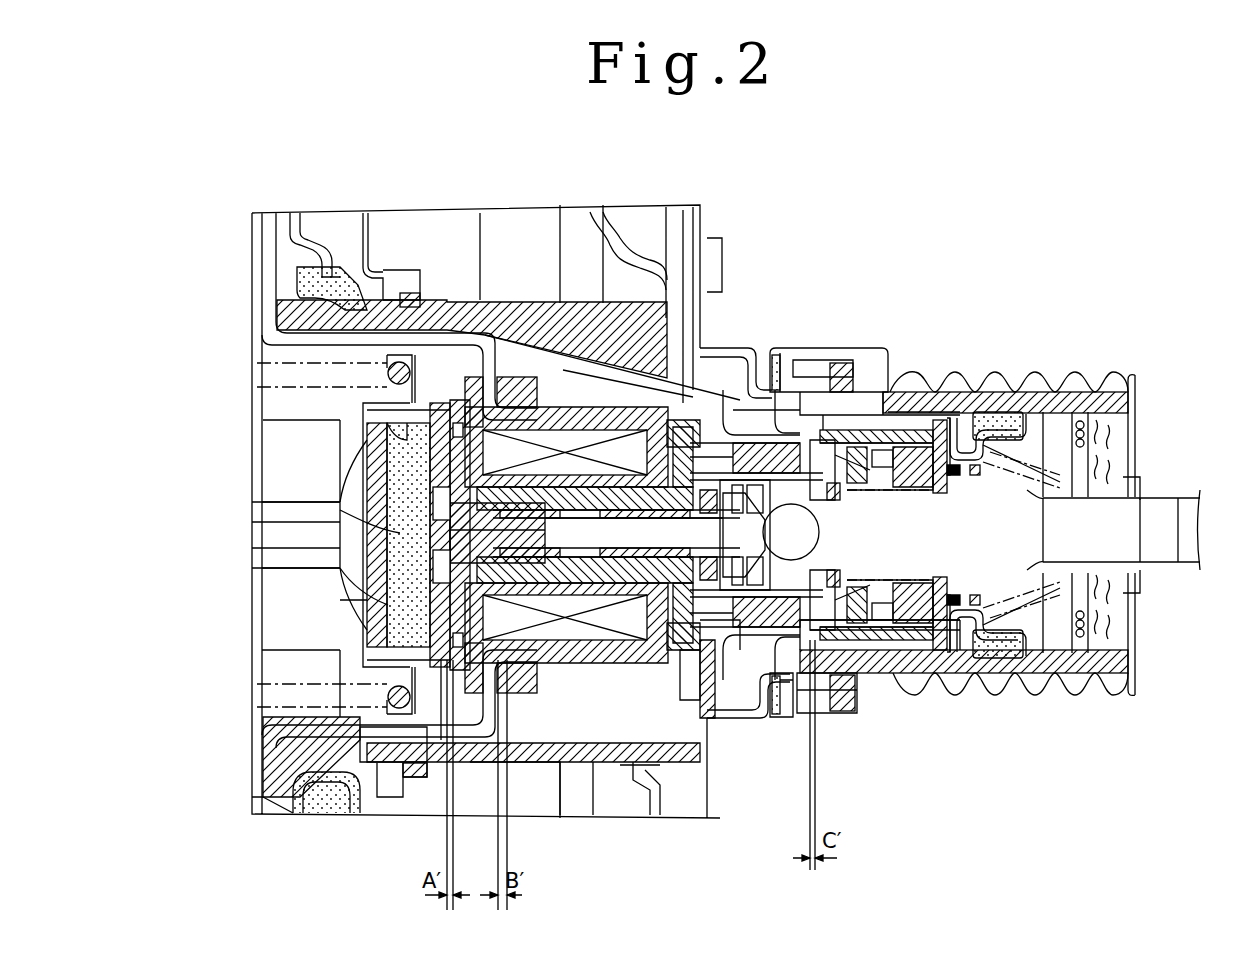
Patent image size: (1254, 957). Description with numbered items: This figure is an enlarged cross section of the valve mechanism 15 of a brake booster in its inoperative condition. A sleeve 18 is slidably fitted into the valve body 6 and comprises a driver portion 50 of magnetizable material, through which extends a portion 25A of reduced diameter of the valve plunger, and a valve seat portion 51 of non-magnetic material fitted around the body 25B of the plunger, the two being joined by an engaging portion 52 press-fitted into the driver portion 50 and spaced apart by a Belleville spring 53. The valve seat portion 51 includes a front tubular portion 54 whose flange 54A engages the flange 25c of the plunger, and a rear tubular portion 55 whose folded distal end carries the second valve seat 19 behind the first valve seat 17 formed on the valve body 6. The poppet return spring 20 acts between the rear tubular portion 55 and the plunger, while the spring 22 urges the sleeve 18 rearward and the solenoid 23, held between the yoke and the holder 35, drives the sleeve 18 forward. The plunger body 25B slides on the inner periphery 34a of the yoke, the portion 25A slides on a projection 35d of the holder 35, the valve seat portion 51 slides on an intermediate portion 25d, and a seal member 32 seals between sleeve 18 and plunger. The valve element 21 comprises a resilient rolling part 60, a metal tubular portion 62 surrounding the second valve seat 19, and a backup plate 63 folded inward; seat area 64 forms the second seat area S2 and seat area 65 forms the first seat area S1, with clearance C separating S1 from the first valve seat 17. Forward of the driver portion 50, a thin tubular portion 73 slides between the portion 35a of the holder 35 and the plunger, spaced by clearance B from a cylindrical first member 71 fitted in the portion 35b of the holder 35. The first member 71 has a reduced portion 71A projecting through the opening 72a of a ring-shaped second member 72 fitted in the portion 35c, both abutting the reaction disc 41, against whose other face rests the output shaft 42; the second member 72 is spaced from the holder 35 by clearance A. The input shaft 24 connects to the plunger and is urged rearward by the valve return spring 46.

The valve body 6 is at (637, 770).
The valve mechanism 15 is at (888, 643).
The first valve seat 17 is at (808, 368).
The sleeve 18 is at (695, 640).
The second valve seat 19 is at (960, 620).
The poppet return spring 20 is at (970, 470).
The valve element 21 is at (973, 683).
The spring 22 is at (913, 650).
The solenoid 23 is at (577, 440).
The input shaft 24 is at (1193, 552).
The portion of a reduced diameter of the valve plunger 25A is at (527, 767).
The body of the valve plunger 25B is at (790, 715).
The flange of the valve plunger 25c is at (925, 440).
The intermediate portion of the valve plunger 25d is at (712, 675).
The annular seal member 32 is at (887, 613).
The inner periphery of the yoke 34a is at (777, 708).
The holder 35 is at (441, 400).
The portion of an increased diameter of the holder 35a is at (370, 412).
The portion of a reduced diameter of the holder 35b is at (579, 535).
The portion of an intermediate diameter of the holder 35c is at (470, 495).
The projection of the holder 35d is at (600, 523).
The reaction disc 41 is at (367, 615).
The output shaft 42 is at (293, 550).
The valve return spring 46 is at (1050, 430).
The driver portion 50 is at (627, 693).
The valve seat portion 51 is at (788, 455).
The engaging portion 52 is at (683, 400).
The Belleville spring 53 is at (636, 535).
The front tubular portion 54 is at (720, 440).
The flange of the front tubular portion 54A is at (830, 435).
The rear tubular portion 55 is at (930, 440).
The rolling part 60 is at (960, 420).
The tubular portion 62 is at (905, 430).
The backup plate 63 is at (827, 443).
The seat area 64 is at (965, 477).
The seat area 65 is at (813, 620).
The first member 71 is at (367, 478).
The portion of a reduced diameter of the first member 71A is at (370, 545).
The second member 72 is at (367, 430).
The opening 72a is at (345, 560).
The tubular portion 73 is at (557, 512).
The first seat area S1 is at (791, 532).
The second seat area S2 is at (933, 420).